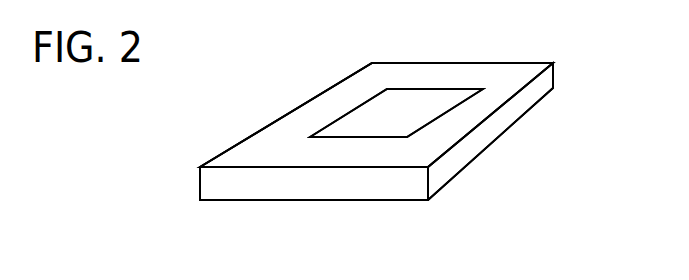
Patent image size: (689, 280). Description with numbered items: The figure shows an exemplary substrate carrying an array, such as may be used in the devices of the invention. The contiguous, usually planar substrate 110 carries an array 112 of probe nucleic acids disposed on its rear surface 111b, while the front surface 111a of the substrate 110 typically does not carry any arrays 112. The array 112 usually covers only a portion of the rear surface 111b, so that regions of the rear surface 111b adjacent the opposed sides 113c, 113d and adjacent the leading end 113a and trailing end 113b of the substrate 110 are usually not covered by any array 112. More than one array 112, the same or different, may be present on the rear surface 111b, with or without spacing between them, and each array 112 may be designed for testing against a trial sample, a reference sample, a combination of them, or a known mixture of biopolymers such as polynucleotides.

The substrate 110 is at (497, 126).
The front surface 111a is at (247, 200).
The rear surface 111b is at (279, 152).
The array 112 is at (377, 106).
The leading end 113a is at (447, 62).
The trailing end 113b is at (330, 191).
The opposed side 113c is at (276, 120).
The opposed side 113d is at (519, 98).